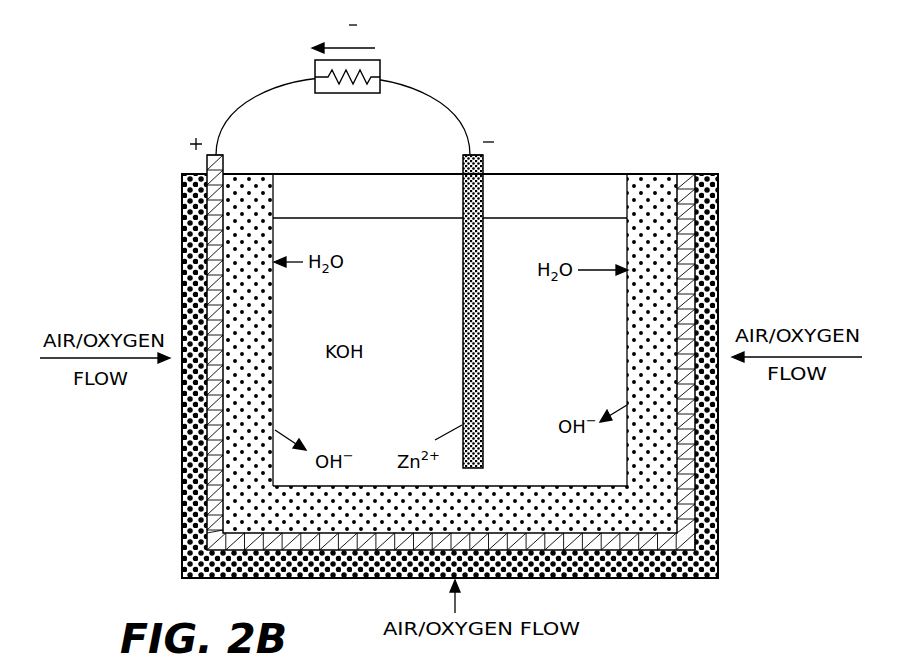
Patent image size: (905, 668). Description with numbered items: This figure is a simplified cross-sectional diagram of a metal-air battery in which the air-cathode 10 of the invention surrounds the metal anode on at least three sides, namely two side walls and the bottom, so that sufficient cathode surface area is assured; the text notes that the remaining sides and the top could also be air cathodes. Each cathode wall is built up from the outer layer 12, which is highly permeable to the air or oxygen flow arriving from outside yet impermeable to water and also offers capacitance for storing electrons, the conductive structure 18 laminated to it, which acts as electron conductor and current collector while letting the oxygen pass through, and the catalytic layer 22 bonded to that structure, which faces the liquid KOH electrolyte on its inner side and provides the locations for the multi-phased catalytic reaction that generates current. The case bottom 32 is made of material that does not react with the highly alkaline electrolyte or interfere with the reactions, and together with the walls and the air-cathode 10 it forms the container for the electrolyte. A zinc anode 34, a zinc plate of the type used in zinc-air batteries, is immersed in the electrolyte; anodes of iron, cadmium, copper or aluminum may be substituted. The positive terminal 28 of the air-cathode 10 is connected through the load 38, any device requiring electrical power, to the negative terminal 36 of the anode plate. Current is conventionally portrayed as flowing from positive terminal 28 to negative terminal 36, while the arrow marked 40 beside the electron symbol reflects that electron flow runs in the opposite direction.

The air-cathode 10 is at (148, 196).
The outer layer 12 is at (708, 518).
The conductive structure 18 is at (218, 165).
The catalytic layer 22 is at (634, 188).
The positive terminal 28 is at (216, 153).
The case bottom 32 is at (550, 488).
The zinc anode 34 is at (484, 166).
The negative terminal 36 is at (463, 160).
The load 38 is at (381, 69).
The electron flow 40 is at (368, 48).